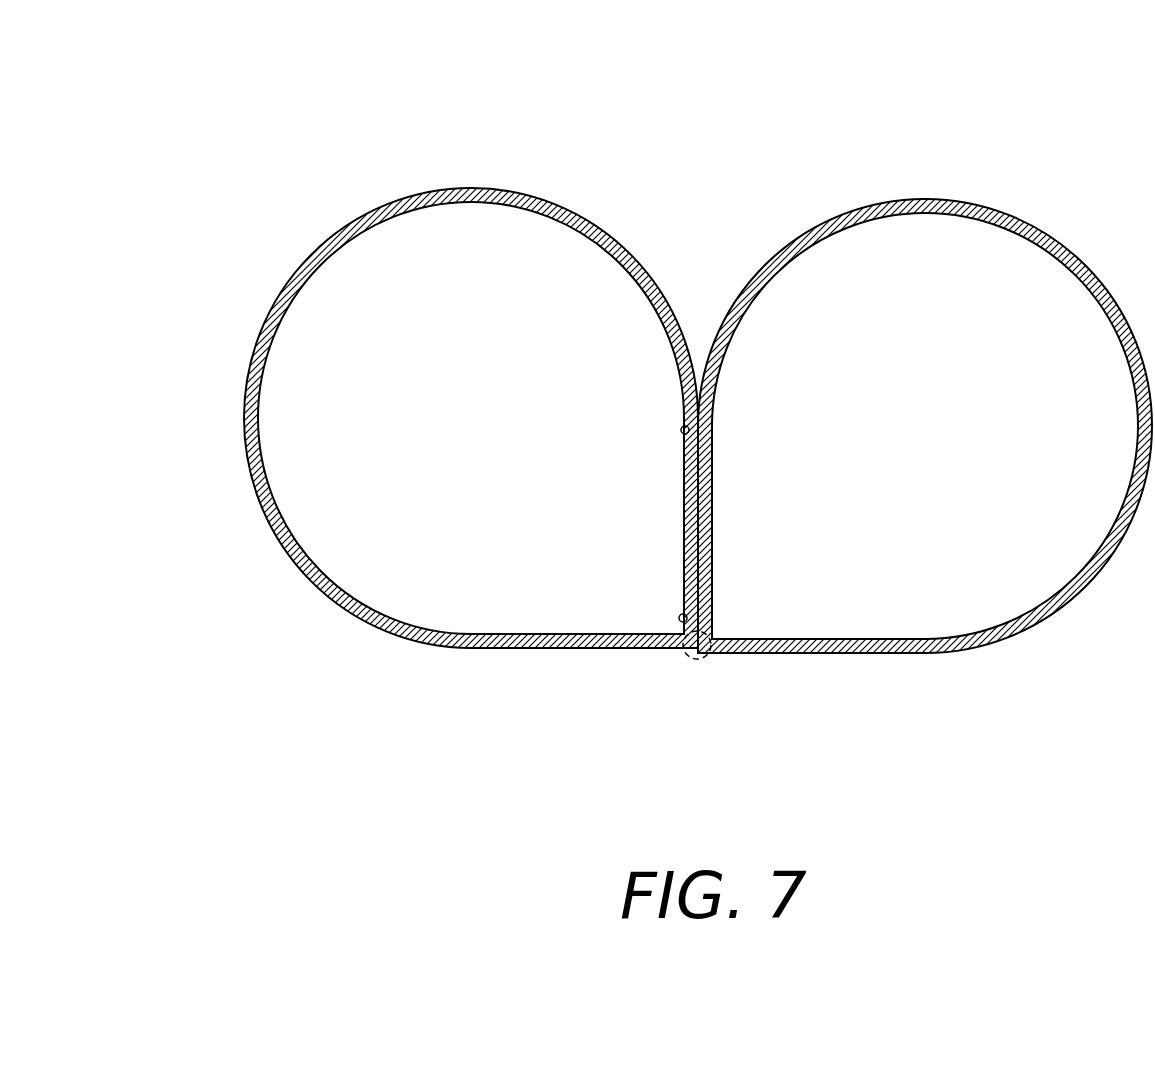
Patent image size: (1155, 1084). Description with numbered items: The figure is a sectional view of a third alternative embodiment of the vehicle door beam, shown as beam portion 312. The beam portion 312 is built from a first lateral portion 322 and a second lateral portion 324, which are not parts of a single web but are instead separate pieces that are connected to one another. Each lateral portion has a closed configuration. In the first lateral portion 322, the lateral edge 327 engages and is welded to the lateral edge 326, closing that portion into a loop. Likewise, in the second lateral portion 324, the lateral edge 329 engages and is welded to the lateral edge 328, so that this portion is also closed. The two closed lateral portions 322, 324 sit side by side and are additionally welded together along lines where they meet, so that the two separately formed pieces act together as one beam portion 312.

The beam portion 312 is at (699, 422).
The first lateral portion 322 is at (1065, 240).
The second lateral portion 324 is at (536, 192).
The lateral edge 326 is at (733, 443).
The lateral edge 327 is at (780, 652).
The lateral edge 328 is at (681, 613).
The lateral edge 329 is at (649, 700).